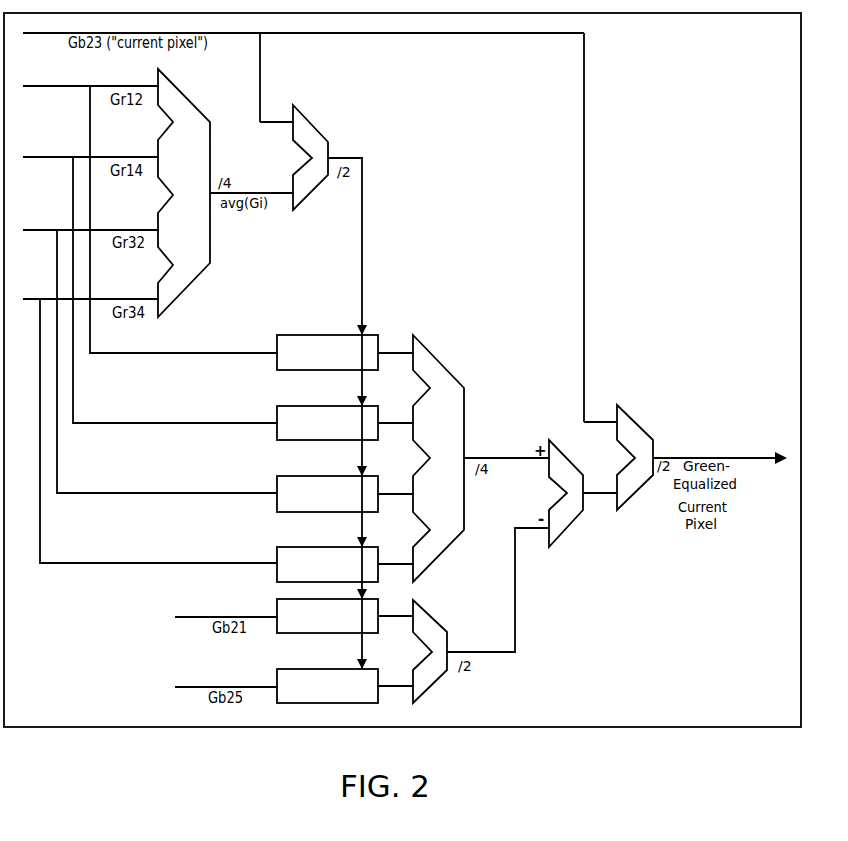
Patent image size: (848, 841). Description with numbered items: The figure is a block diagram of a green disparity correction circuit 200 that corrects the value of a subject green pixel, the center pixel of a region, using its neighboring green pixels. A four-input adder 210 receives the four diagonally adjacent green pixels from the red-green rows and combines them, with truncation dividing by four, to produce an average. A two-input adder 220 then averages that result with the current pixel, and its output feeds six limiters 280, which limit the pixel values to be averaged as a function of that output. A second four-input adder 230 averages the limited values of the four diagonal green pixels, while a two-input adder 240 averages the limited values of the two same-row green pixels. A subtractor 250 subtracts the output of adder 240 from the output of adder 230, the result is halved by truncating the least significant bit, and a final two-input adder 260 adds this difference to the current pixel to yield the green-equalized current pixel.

The green disparity correction circuit 200 is at (750, 701).
The 4-input adder 210 is at (198, 167).
The 2-input adder 220 is at (320, 121).
The 4-input adder 230 is at (453, 429).
The 2-input adder 240 is at (432, 606).
The 2-input subtractor 250 is at (574, 526).
The 2-input adder 260 is at (638, 416).
The limiters 280 is at (270, 410).